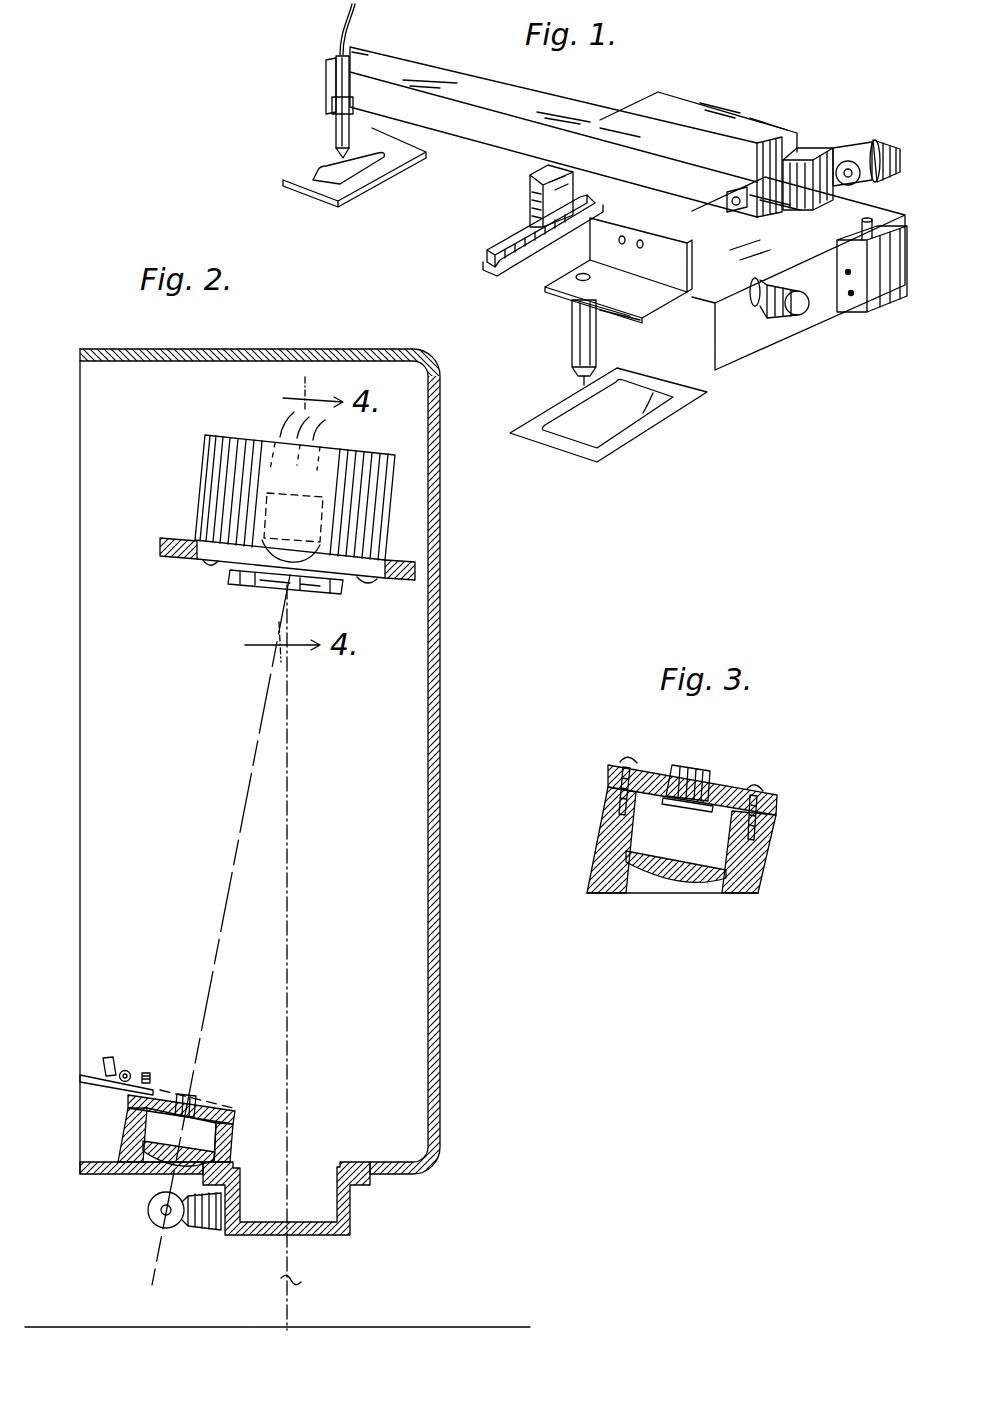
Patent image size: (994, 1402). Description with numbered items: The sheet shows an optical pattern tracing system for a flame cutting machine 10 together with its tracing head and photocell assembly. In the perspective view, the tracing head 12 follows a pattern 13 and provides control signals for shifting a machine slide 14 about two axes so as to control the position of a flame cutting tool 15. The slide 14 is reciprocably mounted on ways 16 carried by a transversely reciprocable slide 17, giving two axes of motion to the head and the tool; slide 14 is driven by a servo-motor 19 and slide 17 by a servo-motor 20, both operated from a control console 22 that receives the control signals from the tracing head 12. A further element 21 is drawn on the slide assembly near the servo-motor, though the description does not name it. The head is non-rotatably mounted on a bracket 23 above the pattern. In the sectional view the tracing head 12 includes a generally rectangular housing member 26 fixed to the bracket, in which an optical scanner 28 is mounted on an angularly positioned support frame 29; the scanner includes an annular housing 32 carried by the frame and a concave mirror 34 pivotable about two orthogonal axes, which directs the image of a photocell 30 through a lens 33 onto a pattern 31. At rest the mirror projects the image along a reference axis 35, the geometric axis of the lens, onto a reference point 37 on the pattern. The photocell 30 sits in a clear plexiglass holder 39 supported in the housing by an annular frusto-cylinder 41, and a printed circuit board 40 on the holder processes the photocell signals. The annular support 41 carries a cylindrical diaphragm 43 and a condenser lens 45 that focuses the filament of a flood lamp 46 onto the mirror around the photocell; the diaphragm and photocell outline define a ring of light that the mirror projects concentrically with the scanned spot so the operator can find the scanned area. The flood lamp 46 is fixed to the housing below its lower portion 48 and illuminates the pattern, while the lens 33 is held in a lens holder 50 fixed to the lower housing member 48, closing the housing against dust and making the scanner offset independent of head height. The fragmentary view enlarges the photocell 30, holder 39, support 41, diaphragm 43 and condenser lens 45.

In FIG. 1, the flame cutting machine 10 is at (676, 57).
In FIG. 1, the tracing head 12 is at (575, 324).
In FIG. 2, the tracing head 12 is at (484, 553).
In FIG. 1, the pattern 13 is at (600, 450).
In FIG. 1, the machine slide 14 is at (458, 124).
In FIG. 1, the flame cutting tool 15 is at (337, 124).
In FIG. 1, the ways 16 is at (885, 177).
In FIG. 1, the transversely reciprocable slide 17 is at (763, 245).
In FIG. 1, the servo-motor 19 is at (866, 153).
In FIG. 1, the servo-motor 20 is at (797, 318).
In FIG. 1, the slide block 21 is at (662, 200).
In FIG. 1, the control console 22 is at (873, 312).
In FIG. 1, the bracket 23 is at (565, 284).
In FIG. 2, the housing member 26 is at (441, 678).
In FIG. 2, the optical scanner 28 is at (180, 462).
In FIG. 2, the support frame 29 is at (163, 546).
In FIG. 2, the photocell 30 is at (191, 1094).
In FIG. 3, the photocell 30 is at (700, 775).
In FIG. 2, the pattern 31 is at (410, 1326).
In FIG. 2, the annular housing 32 is at (228, 445).
In FIG. 2, the lens 33 is at (308, 1237).
In FIG. 2, the mirror 34 is at (230, 574).
In FIG. 2, the reference axis 35 is at (289, 843).
In FIG. 2, the reference point 37 is at (290, 1325).
In FIG. 2, the holder 39 is at (127, 1101).
In FIG. 3, the holder 39 is at (608, 774).
In FIG. 2, the printed circuit board 40 is at (92, 1073).
In FIG. 2, the annular frusto-cylinder 41 is at (130, 1135).
In FIG. 3, the annular frusto-cylinder 41 is at (592, 870).
In FIG. 2, the cylindrical diaphragm 43 is at (220, 1137).
In FIG. 3, the cylindrical diaphragm 43 is at (770, 855).
In FIG. 2, the condenser lens 45 is at (168, 1163).
In FIG. 3, the condenser lens 45 is at (690, 876).
In FIG. 2, the flood lamp 46 is at (180, 1226).
In FIG. 2, the lower portion of housing 48 is at (92, 1175).
In FIG. 2, the lens holder 50 is at (343, 1202).